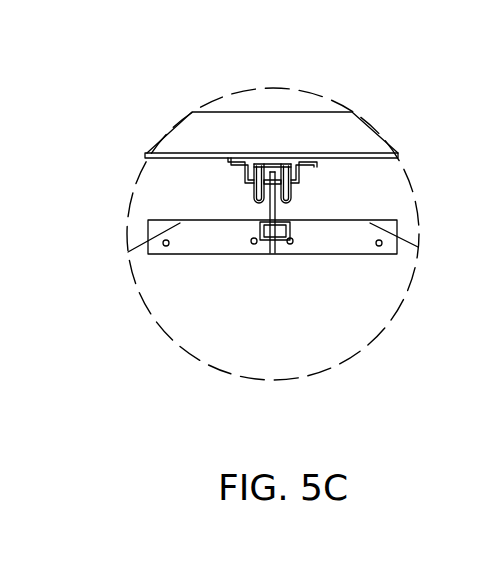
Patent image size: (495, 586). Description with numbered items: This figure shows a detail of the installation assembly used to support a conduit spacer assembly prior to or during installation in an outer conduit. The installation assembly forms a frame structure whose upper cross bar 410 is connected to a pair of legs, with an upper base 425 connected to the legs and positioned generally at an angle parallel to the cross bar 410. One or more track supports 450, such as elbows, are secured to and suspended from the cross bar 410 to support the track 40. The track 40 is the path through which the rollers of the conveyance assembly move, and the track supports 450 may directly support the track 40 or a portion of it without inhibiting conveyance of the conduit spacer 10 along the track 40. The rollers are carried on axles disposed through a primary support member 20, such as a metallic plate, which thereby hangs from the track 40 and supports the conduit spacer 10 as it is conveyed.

The conduit spacer 10 is at (418, 223).
The primary support member 20 is at (279, 211).
The track 40 is at (246, 187).
The upper cross bar 410 is at (182, 158).
The upper base 425 is at (315, 112).
The track support 450 is at (305, 168).